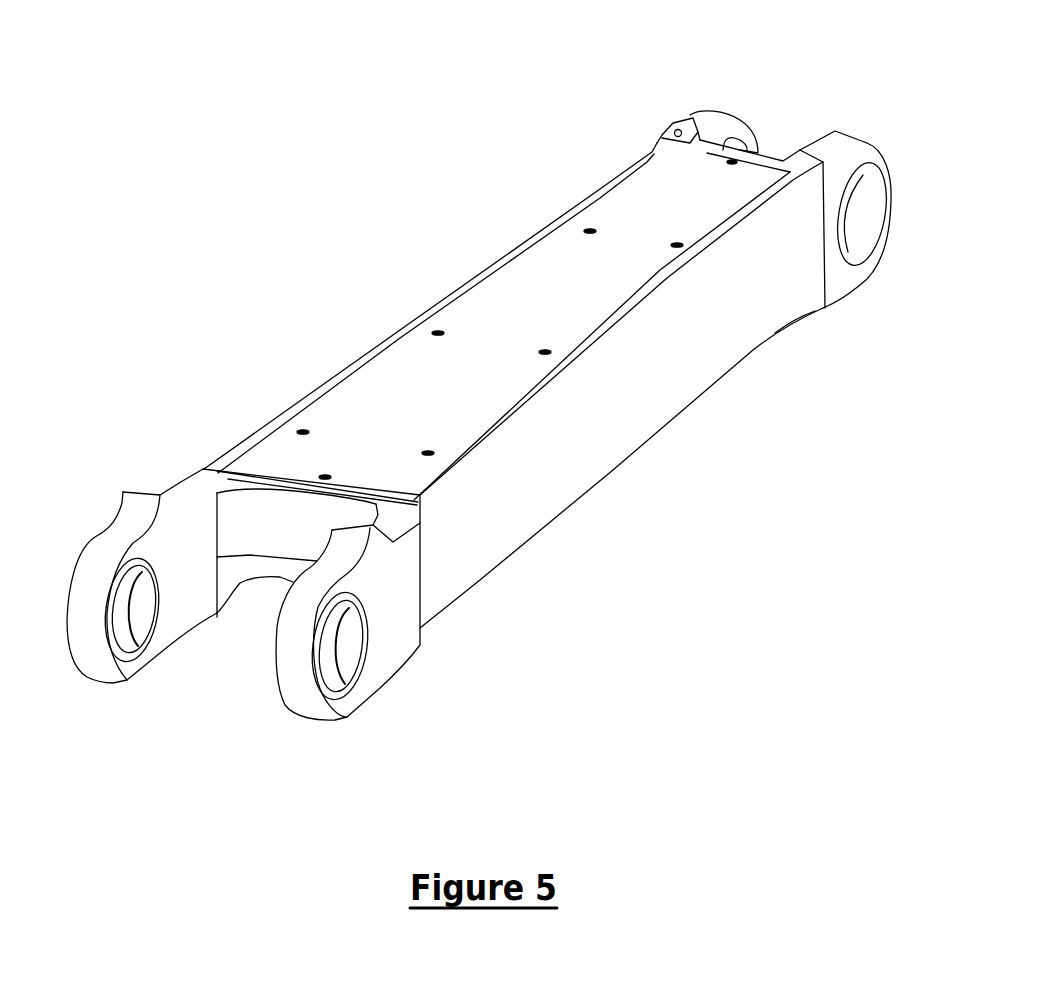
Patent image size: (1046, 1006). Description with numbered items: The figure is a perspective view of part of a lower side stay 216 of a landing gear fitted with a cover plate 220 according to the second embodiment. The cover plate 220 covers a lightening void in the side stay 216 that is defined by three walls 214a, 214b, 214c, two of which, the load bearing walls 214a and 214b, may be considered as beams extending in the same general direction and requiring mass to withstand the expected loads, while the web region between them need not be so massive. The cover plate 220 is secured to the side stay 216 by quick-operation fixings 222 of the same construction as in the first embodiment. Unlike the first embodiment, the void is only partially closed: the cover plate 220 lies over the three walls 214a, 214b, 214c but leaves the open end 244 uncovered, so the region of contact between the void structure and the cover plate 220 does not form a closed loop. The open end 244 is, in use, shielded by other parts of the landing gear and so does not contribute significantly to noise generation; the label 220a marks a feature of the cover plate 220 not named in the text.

The side stay 216 is at (630, 494).
The load bearing wall 214a is at (427, 313).
The load bearing wall 214b is at (590, 353).
The wall 214c is at (260, 518).
The cover plate 220 is at (556, 331).
The rim of recess 220a is at (481, 418).
The quick-operation fixings 222 is at (418, 449).
The open end 244 is at (770, 126).